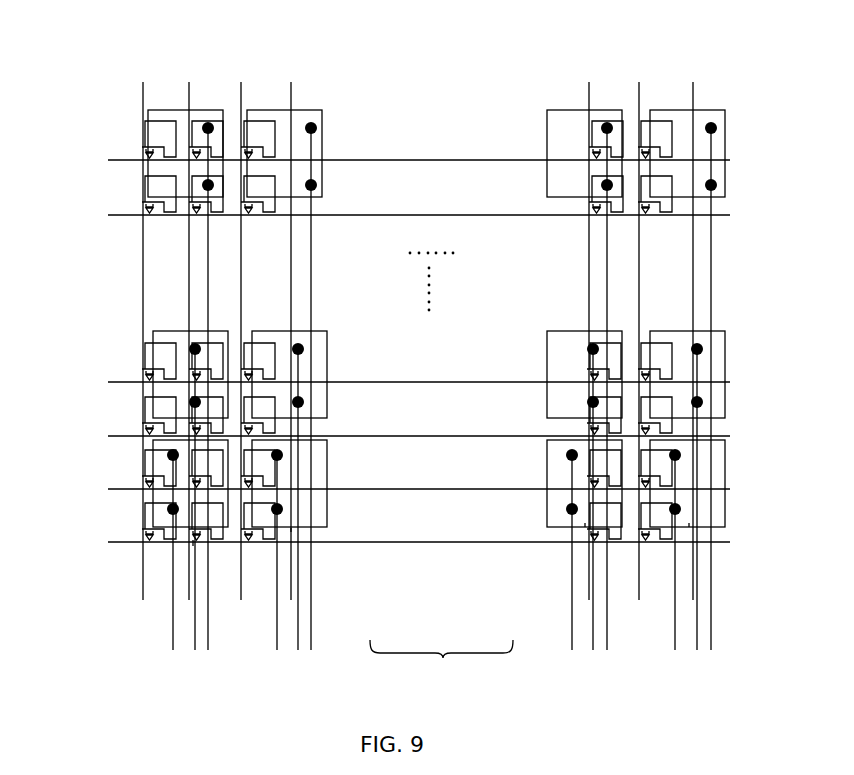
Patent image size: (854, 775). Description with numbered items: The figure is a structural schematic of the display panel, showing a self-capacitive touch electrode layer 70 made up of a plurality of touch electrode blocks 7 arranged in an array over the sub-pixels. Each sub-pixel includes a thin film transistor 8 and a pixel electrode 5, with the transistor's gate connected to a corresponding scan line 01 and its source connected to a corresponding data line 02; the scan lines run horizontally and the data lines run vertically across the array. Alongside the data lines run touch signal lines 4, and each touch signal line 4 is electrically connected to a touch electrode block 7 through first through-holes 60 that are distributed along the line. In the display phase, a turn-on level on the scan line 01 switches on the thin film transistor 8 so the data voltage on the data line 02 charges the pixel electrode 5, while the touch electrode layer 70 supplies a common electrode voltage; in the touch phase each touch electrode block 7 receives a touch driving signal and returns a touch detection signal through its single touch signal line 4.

The scan line 01 is at (130, 162).
The data line 02 is at (142, 92).
The touch signal line 4 is at (174, 630).
The pixel electrode 5 is at (662, 204).
The first through-hole 60 is at (320, 185).
The touch electrode block 7 is at (195, 545).
The self-capacitive touch electrode layer 70 is at (441, 662).
The thin film transistor 8 is at (142, 542).